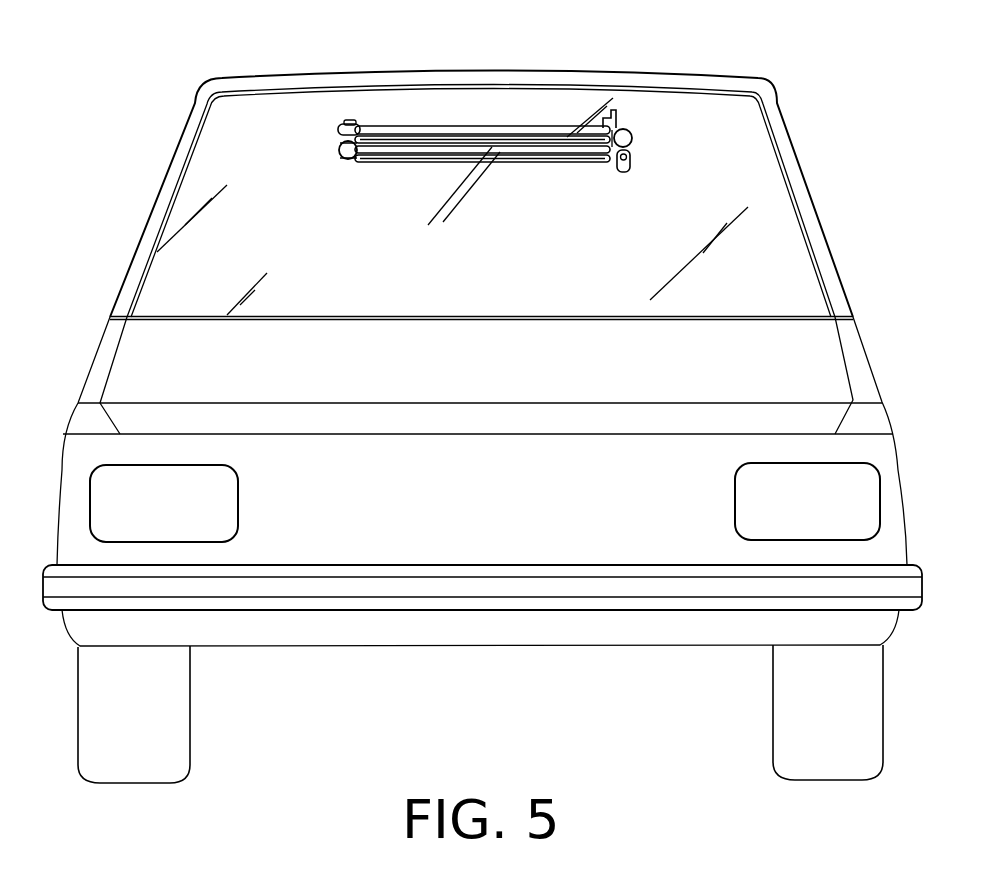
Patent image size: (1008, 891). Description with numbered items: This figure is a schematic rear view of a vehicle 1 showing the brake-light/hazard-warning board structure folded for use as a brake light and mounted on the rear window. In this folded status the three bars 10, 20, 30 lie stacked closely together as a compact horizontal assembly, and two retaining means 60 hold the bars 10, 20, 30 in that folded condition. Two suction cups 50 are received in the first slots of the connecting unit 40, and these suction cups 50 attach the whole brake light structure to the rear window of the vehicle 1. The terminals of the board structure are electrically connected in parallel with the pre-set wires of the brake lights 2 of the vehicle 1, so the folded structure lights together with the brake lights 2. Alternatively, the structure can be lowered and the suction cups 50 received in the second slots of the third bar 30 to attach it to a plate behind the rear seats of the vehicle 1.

The vehicle 1 is at (505, 633).
The brake lights 2 is at (236, 505).
The first bar 10 is at (457, 128).
The second bar 20 is at (433, 143).
The third bar 30 is at (536, 160).
The connecting unit 40 is at (627, 170).
The suction cups 50 is at (339, 152).
The retaining means 60 is at (371, 123).